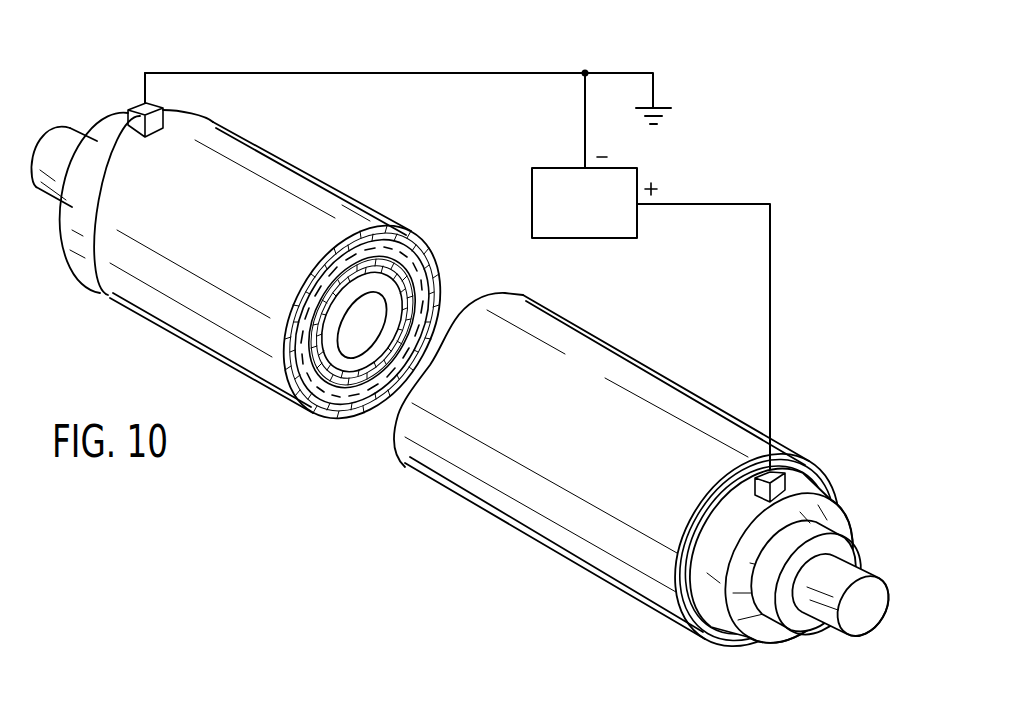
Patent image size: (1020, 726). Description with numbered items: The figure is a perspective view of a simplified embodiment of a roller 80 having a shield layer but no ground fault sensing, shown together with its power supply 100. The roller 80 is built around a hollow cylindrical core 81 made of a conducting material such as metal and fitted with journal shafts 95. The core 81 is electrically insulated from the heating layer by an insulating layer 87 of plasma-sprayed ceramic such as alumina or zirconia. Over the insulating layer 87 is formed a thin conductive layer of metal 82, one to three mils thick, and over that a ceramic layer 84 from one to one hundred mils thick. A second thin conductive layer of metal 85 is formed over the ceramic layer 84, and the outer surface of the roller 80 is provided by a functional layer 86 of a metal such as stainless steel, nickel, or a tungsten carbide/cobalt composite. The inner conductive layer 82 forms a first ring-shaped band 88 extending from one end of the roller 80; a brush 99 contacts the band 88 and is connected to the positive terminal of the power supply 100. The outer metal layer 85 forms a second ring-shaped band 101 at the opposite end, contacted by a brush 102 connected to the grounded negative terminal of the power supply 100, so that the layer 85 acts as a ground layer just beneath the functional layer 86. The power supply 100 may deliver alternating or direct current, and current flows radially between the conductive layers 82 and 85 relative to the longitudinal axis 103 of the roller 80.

The roller 80 is at (648, 349).
The hollow cylindrical core 81 is at (362, 310).
The conductive layer of metal 82 is at (312, 420).
The ceramic layer 84 is at (340, 425).
The second thin conductive layer of metal 85 is at (357, 425).
The functional layer 86 is at (343, 210).
The insulating layer 87 is at (310, 348).
The first ring-shaped band 88 is at (737, 523).
The journal shafts 95 is at (860, 628).
The brush 99 is at (788, 478).
The power supply 100 is at (567, 168).
The second ring-shaped band 101 is at (80, 250).
The brush 102 is at (130, 113).
The longitudinal axis 103 is at (431, 361).